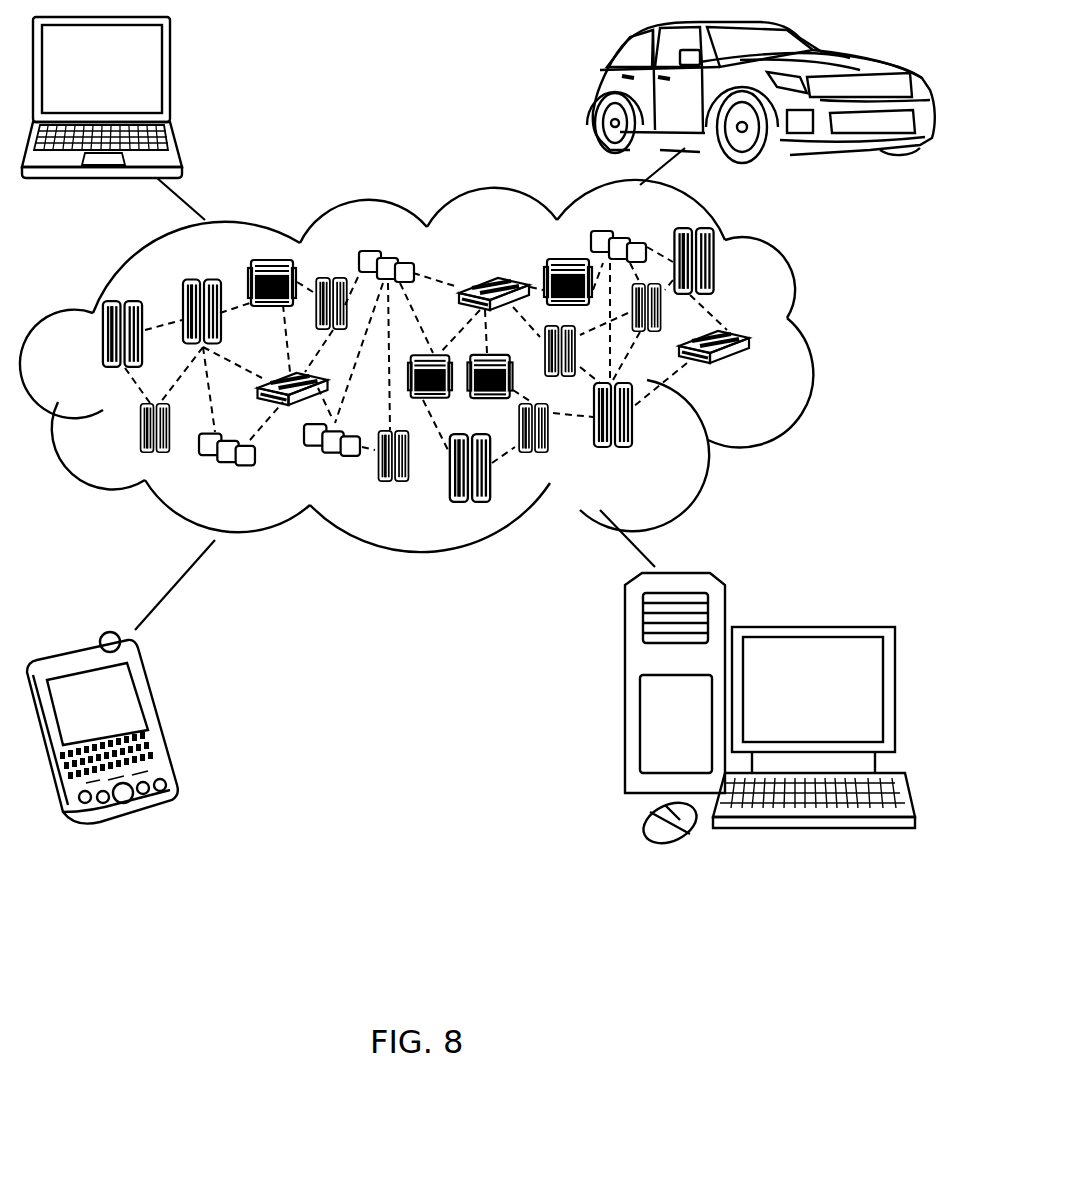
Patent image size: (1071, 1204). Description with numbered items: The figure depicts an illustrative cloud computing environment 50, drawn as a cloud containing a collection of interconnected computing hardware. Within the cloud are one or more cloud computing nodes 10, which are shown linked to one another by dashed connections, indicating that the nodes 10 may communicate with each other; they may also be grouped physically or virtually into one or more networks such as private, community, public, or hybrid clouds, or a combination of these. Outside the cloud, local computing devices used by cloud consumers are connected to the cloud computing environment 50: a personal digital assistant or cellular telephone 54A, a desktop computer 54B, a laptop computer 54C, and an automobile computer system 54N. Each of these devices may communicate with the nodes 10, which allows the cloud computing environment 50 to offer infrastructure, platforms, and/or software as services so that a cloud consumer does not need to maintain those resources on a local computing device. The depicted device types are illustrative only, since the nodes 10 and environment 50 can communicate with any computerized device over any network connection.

The cloud computing node 10 is at (753, 376).
The cloud computing environment 50 is at (810, 347).
The personal digital assistant (PDA) or cellular telephone 54A is at (160, 720).
The desktop computer 54B is at (812, 627).
The laptop computer 54C is at (172, 78).
The automobile computer system 54N is at (597, 95).